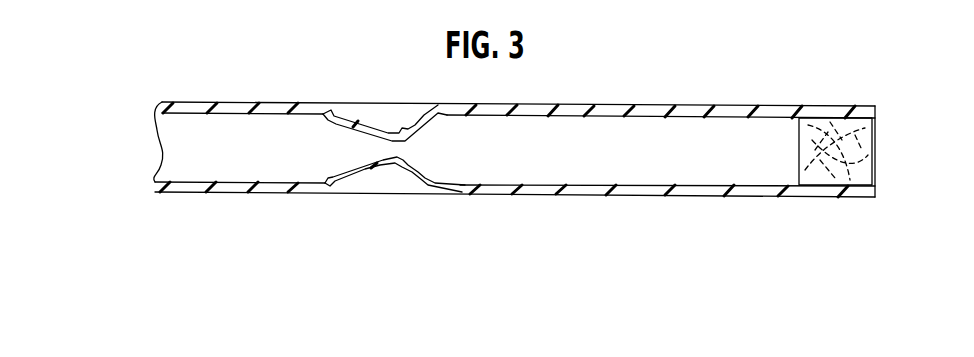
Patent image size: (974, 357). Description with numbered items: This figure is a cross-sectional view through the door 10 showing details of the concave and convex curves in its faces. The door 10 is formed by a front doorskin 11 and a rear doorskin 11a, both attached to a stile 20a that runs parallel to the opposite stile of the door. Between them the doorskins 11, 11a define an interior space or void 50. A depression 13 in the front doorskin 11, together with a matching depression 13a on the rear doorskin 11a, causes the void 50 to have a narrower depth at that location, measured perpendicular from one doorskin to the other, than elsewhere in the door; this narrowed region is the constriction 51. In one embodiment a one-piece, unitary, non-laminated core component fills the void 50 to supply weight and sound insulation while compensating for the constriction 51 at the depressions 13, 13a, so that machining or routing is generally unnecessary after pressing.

The door 10 is at (797, 93).
The doorskin 11 is at (657, 104).
The rear doorskin 11a is at (748, 198).
The depression 13 is at (353, 113).
The depression 13a is at (358, 170).
The void 50 is at (557, 157).
The constriction 51 is at (400, 148).
The stile 20a is at (860, 148).